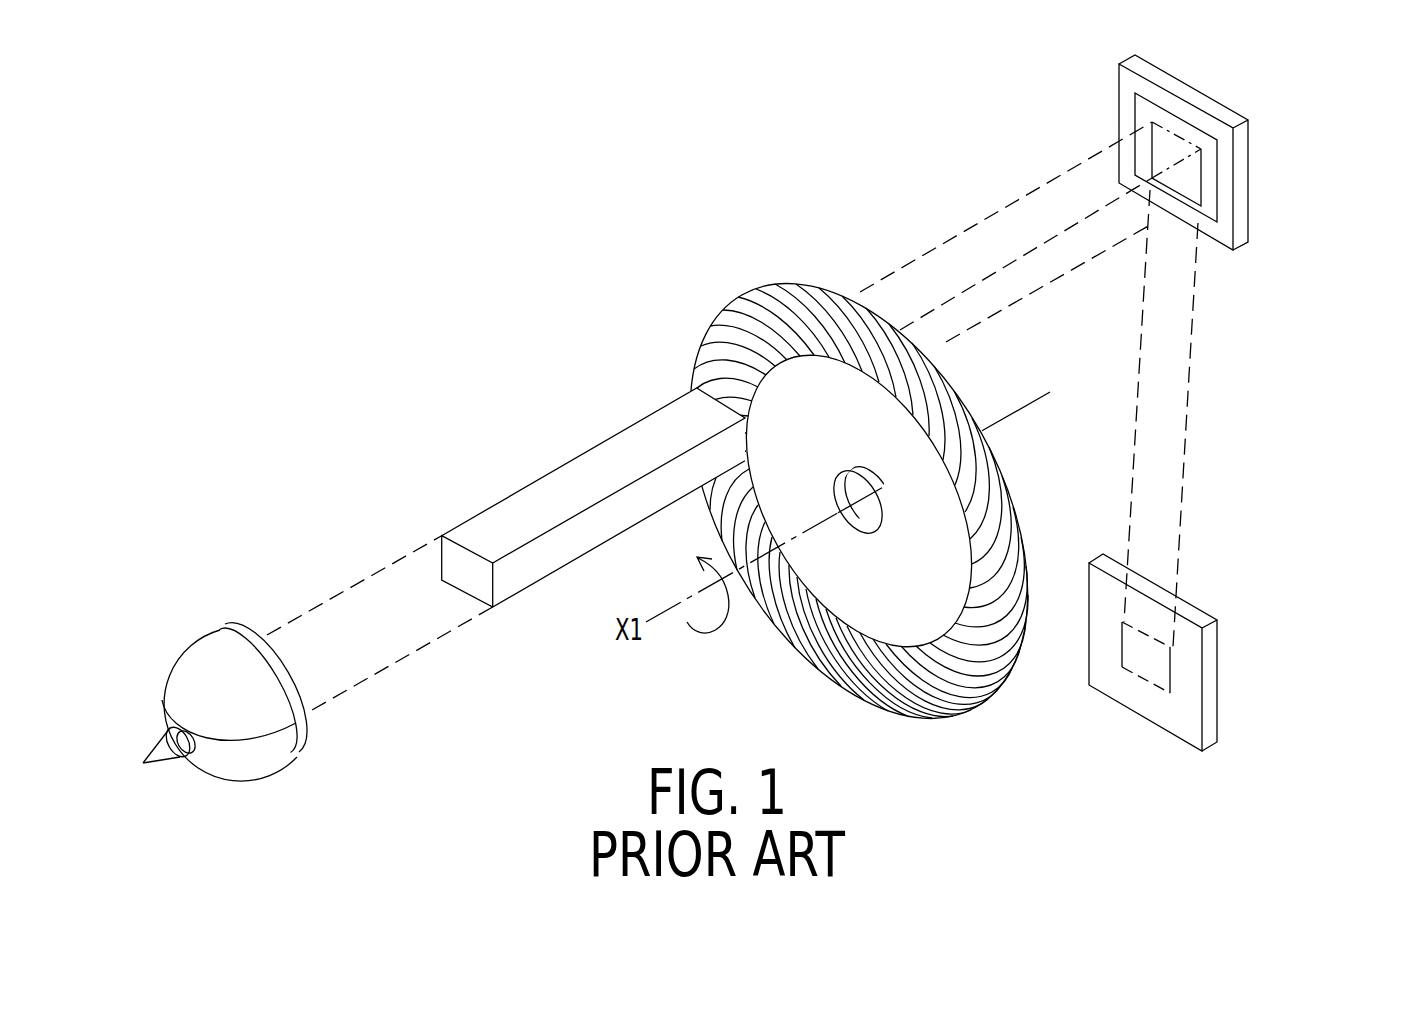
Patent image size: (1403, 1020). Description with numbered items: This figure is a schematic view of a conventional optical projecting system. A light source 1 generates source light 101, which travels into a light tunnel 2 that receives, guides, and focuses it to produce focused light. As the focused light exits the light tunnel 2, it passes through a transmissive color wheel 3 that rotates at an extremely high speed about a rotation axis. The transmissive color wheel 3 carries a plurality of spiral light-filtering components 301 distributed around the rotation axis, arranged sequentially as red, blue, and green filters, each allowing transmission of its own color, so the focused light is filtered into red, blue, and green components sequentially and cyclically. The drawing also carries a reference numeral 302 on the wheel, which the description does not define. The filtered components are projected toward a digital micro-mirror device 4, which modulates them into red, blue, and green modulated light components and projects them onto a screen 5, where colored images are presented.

The light source 1 is at (190, 636).
The source light 101 is at (354, 575).
The light tunnel 2 is at (566, 461).
The transmissive color wheel 3 is at (829, 461).
The spiral light-filtering components 301 is at (816, 286).
The grooves of wheel 302 is at (720, 328).
The digital micro-mirror device (DMD) 4 is at (1254, 178).
The screen 5 is at (1225, 670).